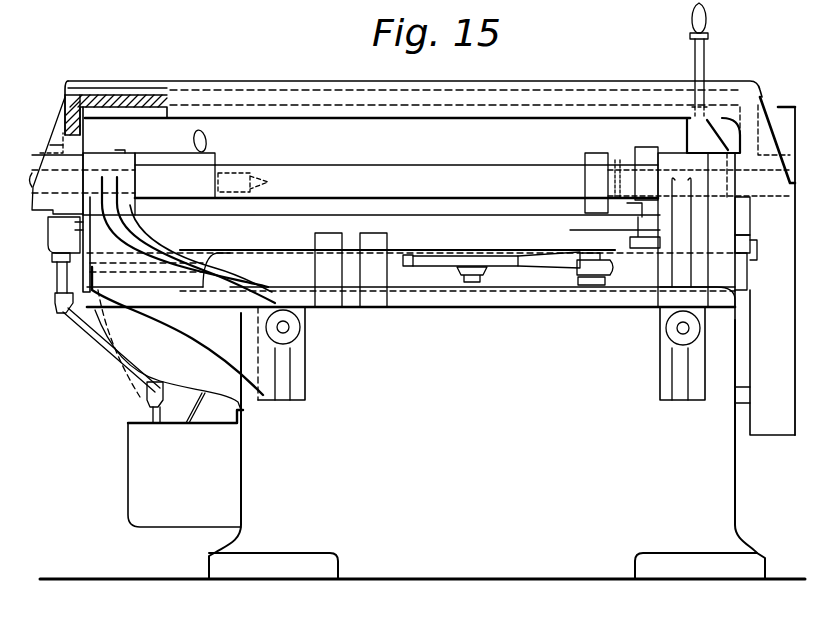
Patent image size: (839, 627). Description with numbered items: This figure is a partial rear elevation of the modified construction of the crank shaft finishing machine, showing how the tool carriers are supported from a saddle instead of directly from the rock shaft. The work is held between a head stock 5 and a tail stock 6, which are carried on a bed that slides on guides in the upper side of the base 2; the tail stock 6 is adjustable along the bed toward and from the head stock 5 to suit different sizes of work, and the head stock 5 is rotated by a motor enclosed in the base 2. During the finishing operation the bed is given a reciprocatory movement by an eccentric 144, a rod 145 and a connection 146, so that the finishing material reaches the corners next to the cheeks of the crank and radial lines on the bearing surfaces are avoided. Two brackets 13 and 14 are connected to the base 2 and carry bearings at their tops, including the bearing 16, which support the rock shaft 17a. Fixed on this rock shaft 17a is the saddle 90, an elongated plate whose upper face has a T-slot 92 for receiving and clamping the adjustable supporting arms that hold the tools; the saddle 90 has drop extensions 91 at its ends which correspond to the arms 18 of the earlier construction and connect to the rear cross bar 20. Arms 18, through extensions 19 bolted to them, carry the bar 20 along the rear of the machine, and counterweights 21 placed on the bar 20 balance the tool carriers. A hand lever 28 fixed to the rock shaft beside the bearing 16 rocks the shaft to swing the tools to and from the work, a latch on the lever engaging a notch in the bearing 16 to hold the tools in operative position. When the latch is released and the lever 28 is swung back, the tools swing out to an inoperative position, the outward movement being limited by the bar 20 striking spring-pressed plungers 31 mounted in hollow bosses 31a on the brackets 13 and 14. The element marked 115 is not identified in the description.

The base 2 is at (422, 446).
The head stock 5 is at (643, 157).
The tail stock 6 is at (206, 158).
The bracket 13 is at (197, 323).
The bracket 14 is at (672, 375).
The bearing 16 is at (677, 163).
The rock shaft 17a is at (438, 168).
The arm 18 is at (80, 222).
The extension 19 is at (83, 273).
The rear bar 20 is at (498, 307).
The counterweight 21 is at (377, 297).
The hand lever 28 is at (707, 60).
The spring pressed plunger 31 is at (288, 328).
The hollow boss 31a is at (291, 343).
The saddle 90 is at (517, 110).
The drop extension 91 is at (748, 128).
The T-slot 92 is at (158, 92).
The headstock housing 115 is at (147, 136).
The eccentric 144 is at (593, 281).
The rod 145 is at (557, 264).
The connection 146 is at (472, 283).